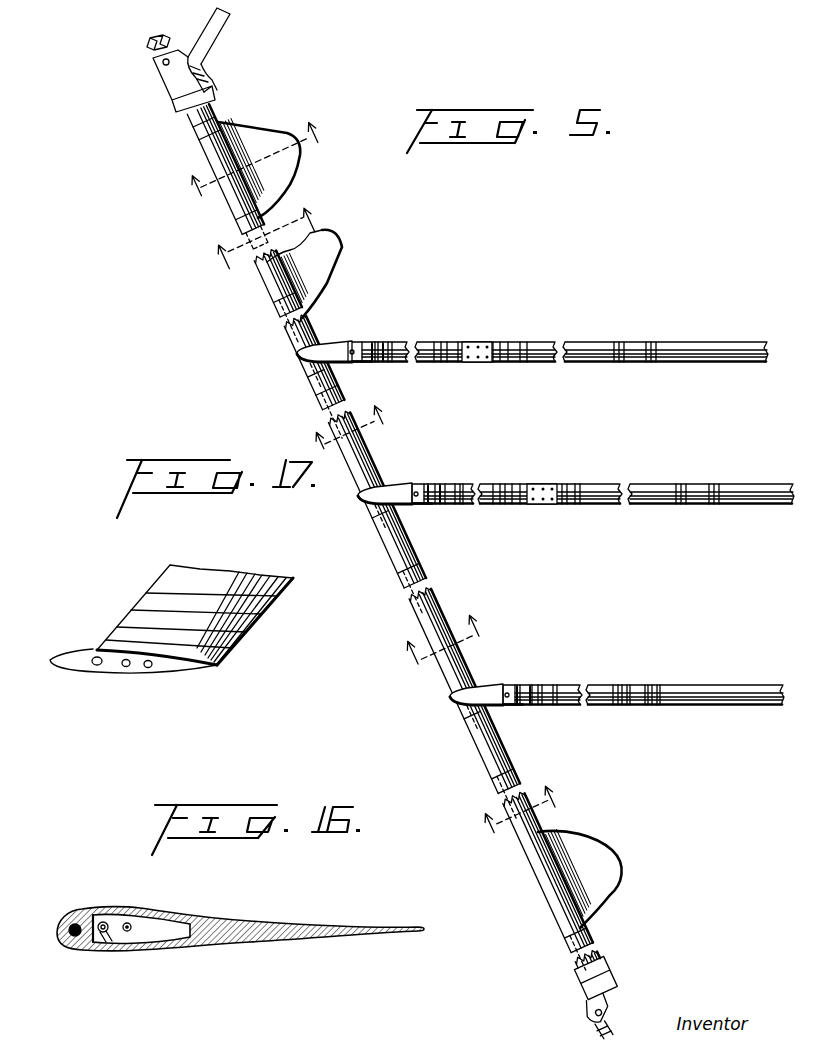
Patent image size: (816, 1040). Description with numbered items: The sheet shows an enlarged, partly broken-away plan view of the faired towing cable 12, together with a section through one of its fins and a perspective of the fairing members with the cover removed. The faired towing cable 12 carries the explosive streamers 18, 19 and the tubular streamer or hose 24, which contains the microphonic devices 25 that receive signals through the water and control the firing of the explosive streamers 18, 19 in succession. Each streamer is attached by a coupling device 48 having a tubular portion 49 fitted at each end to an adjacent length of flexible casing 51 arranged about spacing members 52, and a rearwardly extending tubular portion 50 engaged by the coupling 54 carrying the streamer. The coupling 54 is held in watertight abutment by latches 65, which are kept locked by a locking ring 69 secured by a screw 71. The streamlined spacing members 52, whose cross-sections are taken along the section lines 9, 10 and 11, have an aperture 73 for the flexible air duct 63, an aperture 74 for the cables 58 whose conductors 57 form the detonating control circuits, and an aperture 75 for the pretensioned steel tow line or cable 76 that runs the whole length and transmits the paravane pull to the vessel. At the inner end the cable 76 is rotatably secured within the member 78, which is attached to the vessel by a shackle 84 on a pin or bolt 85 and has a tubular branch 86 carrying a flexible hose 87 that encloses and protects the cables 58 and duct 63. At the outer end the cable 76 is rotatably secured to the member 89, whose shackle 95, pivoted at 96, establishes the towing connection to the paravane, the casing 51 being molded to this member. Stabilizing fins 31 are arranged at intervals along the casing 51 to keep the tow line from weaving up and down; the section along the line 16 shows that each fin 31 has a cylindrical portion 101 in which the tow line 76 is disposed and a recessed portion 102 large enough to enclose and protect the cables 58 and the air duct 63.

In FIG. 5, the section line 9— 9 is at (270, 246).
In FIG. 5, the section line 10— 10 is at (355, 438).
In FIG. 5, the section line 11— 11 is at (447, 647).
In FIG. 5, the faired towing cable 12 is at (316, 413).
In FIG. 5, the section line 16— 16 is at (260, 170).
In FIG. 5, the explosive streamer 18 is at (627, 486).
In FIG. 5, the explosive streamer 19 is at (560, 343).
In FIG. 5, the tubular streamer or hose 24 is at (596, 687).
In FIG. 5, the microphonic devices 25 is at (634, 688).
In FIG. 5, the stabilizing fin 31 is at (283, 128).
In FIG. 16, the stabilizing fin 31 is at (350, 925).
In FIG. 5, the coupling device 48 is at (348, 336).
In FIG. 5, the tubular portion 49 is at (303, 373).
In FIG. 5, the tubular portion 50 is at (341, 364).
In FIG. 5, the flexible casing 51 is at (193, 129).
In FIG. 17, the spacing members 52 is at (110, 642).
In FIG. 5, the coupling 54 is at (368, 345).
In FIG. 16, the conductors 57 is at (95, 945).
In FIG. 16, the cable 58 is at (108, 920).
In FIG. 16, the flexible tube or duct 63 is at (131, 921).
In FIG. 5, the latches 65 is at (371, 364).
In FIG. 5, the locking ring 69 is at (360, 344).
In FIG. 5, the screw 71 is at (345, 352).
In FIG. 17, the aperture 73 is at (145, 668).
In FIG. 16, the aperture 73 is at (158, 950).
In FIG. 17, the aperture 74 is at (127, 658).
In FIG. 16, the aperture 74 is at (125, 946).
In FIG. 17, the aperture 75 is at (90, 663).
In FIG. 16, the tow line or cable 76 is at (70, 938).
In FIG. 5, the member 78 is at (160, 85).
In FIG. 5, the shackle 84 is at (160, 54).
In FIG. 5, the pin or bolt 85 is at (176, 57).
In FIG. 5, the tubular branch 86 is at (198, 65).
In FIG. 5, the flexible hose or tube 87 is at (226, 24).
In FIG. 5, the member 89 is at (604, 978).
In FIG. 5, the shackle 95 is at (596, 1029).
In FIG. 5, the pivot 96 is at (605, 1012).
In FIG. 16, the cylindrical portion 101 is at (72, 922).
In FIG. 16, the recessed portion 102 is at (150, 927).